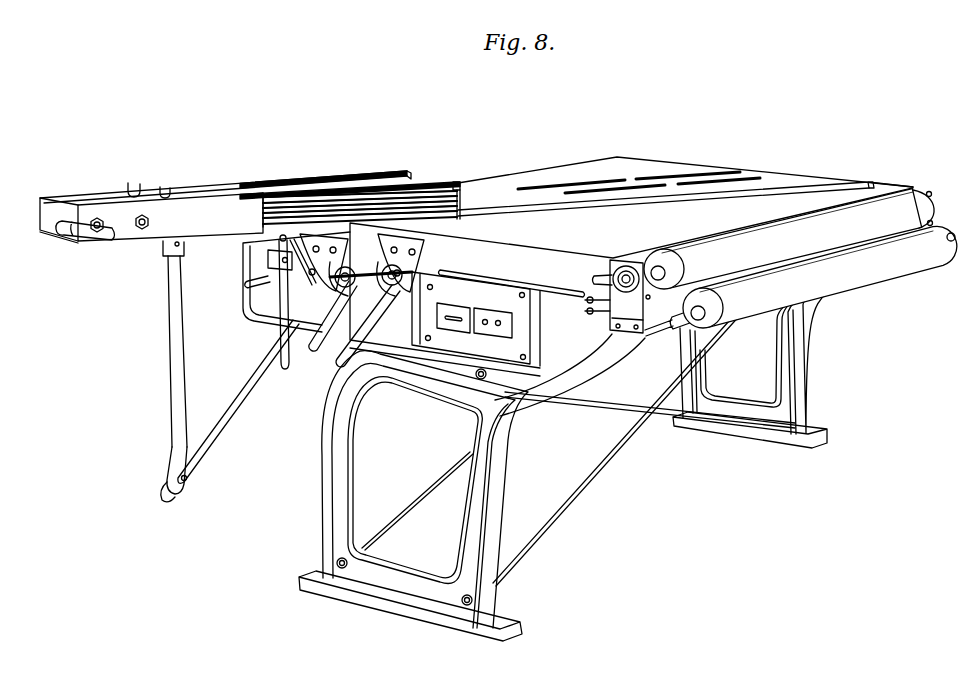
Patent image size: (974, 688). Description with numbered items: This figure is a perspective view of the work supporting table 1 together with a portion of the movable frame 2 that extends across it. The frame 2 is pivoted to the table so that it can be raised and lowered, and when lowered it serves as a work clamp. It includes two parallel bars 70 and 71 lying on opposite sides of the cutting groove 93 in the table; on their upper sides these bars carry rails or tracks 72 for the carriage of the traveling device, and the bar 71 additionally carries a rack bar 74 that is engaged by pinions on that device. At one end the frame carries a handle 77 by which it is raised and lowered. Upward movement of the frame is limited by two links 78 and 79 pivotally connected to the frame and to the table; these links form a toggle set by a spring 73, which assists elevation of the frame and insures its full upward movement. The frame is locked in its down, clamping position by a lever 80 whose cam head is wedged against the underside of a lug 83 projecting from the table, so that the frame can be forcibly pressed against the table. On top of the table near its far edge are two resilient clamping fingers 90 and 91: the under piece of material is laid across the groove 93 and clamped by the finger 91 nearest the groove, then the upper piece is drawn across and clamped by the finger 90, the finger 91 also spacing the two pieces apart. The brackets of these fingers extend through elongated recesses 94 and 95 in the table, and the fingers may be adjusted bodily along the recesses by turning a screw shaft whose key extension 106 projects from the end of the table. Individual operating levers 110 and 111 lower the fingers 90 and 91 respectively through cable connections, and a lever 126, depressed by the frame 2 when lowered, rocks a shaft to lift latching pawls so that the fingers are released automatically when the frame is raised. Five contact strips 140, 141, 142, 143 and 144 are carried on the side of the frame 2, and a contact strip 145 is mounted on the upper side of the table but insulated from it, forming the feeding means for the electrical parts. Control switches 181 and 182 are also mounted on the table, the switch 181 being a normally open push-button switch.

The work supporting table 1 is at (631, 266).
The movable frame 2 is at (42, 212).
The parallel bar 70 is at (80, 196).
The parallel bar 71 is at (207, 230).
The rails or tracks 72 is at (164, 187).
The spring 73 is at (168, 480).
The rack bar 74 is at (417, 182).
The handle 77 is at (90, 243).
The link 78 is at (170, 350).
The link 79 is at (236, 404).
The lever 80 is at (278, 300).
The lug 83 is at (272, 259).
The clamping finger 90 is at (612, 184).
The clamping finger 91 is at (648, 188).
The cutting groove 93 is at (766, 184).
The elongated recess 94 is at (674, 176).
The elongated recess 95 is at (716, 180).
The key extension 106 is at (246, 281).
The operating lever 110 is at (310, 352).
The operating lever 111 is at (343, 366).
The lever 126 is at (300, 289).
The contact strip 140 is at (461, 186).
The contact strip 141 is at (461, 193).
The contact strip 142 is at (461, 200).
The contact strip 143 is at (461, 207).
The contact strip 144 is at (461, 214).
The contact strip 145 is at (678, 199).
The control switch 181 is at (450, 328).
The control switch 182 is at (487, 318).